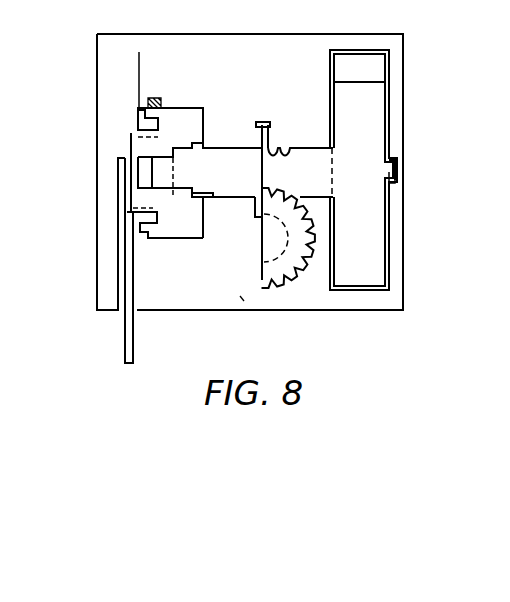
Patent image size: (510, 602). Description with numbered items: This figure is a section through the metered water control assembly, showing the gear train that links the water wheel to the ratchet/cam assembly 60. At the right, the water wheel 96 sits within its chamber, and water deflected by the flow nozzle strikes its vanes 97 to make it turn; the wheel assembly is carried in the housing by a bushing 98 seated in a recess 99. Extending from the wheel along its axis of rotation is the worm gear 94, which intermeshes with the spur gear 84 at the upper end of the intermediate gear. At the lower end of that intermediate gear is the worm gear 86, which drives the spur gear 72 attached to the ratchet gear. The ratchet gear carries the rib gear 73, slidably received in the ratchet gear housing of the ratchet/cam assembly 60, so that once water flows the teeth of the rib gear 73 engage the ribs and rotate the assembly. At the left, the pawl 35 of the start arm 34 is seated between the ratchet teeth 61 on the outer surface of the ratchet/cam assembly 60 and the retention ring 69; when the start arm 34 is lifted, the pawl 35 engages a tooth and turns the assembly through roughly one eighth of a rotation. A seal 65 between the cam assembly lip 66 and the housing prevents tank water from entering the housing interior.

The start arm 34 is at (127, 341).
The pawl 35 is at (127, 212).
The ratchet/cam assembly 60 is at (177, 218).
The ratchet teeth 61 is at (132, 137).
The seal 65 is at (160, 101).
The cam assembly lip 66 is at (150, 100).
The retention ring 69 is at (139, 111).
The spur gear 72 is at (257, 131).
The rib gear 73 is at (210, 146).
The spur gear 84 is at (283, 284).
The worm gear 86 is at (274, 240).
The worm gear 94 is at (281, 148).
The water wheel 96 is at (370, 130).
The vanes 97 is at (375, 68).
The bushing 98 is at (392, 184).
The recess 99 is at (402, 165).